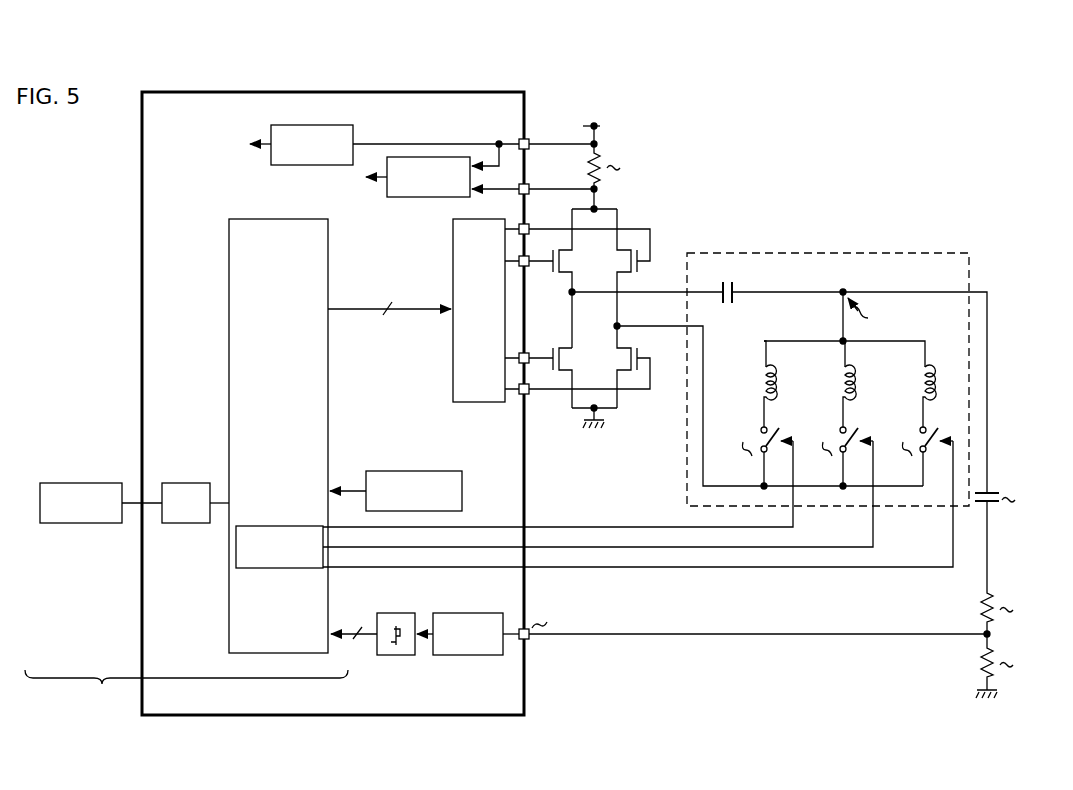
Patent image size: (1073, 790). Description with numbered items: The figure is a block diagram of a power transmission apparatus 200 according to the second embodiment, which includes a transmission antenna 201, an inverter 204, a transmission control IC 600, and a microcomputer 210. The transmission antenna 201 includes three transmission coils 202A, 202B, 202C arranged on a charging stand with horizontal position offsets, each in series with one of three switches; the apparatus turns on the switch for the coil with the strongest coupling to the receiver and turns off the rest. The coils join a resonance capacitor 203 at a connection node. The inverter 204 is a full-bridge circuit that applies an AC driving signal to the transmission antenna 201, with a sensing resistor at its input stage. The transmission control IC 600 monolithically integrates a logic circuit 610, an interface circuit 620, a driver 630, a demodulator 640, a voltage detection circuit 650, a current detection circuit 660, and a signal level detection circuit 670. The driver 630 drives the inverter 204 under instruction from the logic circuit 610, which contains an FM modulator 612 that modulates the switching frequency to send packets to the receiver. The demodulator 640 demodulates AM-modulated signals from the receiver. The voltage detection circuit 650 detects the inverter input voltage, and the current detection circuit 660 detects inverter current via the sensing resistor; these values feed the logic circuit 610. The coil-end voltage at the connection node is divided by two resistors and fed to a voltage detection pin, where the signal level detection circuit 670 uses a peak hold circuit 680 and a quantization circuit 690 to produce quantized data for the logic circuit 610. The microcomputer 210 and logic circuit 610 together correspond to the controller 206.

The power transmission apparatus 200 is at (877, 124).
The transmission antenna 201 is at (873, 250).
The transmission coil 202A is at (752, 386).
The transmission coil 202B is at (832, 386).
The transmission coil 202C is at (912, 386).
The resonance capacitor 203 is at (727, 304).
The inverter 204 is at (658, 437).
The controller 206 is at (186, 688).
The microcomputer 210 is at (80, 524).
The transmission control IC 600 is at (348, 717).
The logic circuit 610 is at (290, 203).
The FM modulator 612 is at (284, 512).
The interface circuit 620 is at (183, 524).
The driver 630 is at (483, 403).
The demodulator 640 is at (407, 469).
The voltage detection circuit 650 is at (291, 113).
The current detection circuit 660 is at (421, 198).
The signal level detection circuit 670 is at (510, 670).
The peak hold circuit 680 is at (466, 613).
The quantization circuit 690 is at (402, 613).